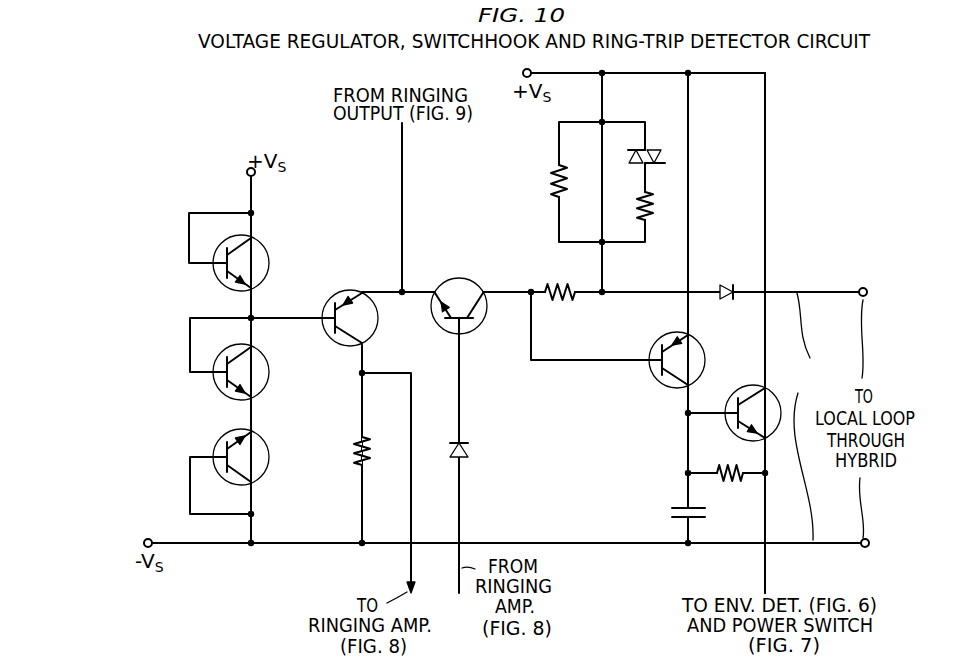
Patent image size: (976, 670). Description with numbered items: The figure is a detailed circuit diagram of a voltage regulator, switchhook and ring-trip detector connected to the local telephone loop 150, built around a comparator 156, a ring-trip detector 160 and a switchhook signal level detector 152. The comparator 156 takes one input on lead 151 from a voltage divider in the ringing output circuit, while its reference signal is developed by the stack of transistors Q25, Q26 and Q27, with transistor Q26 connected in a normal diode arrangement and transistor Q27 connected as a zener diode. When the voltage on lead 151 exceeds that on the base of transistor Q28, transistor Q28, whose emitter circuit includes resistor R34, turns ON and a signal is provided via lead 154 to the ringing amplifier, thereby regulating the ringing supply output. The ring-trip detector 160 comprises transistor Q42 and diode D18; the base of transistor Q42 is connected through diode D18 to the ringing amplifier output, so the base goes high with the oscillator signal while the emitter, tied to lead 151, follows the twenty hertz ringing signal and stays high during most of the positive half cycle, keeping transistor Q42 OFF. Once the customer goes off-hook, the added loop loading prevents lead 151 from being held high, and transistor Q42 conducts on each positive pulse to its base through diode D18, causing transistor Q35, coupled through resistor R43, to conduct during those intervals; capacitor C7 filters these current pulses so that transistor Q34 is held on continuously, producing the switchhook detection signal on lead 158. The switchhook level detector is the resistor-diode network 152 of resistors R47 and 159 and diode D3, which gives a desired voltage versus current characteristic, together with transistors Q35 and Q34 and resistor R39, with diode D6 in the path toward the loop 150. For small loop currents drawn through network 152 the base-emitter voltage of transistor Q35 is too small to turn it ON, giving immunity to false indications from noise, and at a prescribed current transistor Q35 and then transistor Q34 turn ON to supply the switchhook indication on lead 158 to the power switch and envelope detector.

The transistor Q25 is at (221, 283).
The transistor Q26 is at (221, 392).
The transistor Q27 is at (221, 437).
The transistor Q28 is at (330, 338).
The transistor Q42 is at (479, 327).
The transistor Q35 is at (658, 380).
The transistor Q34 is at (744, 389).
The resistor R34 is at (354, 445).
The resistor R43 is at (550, 285).
The resistor R47 is at (549, 177).
The resistor R39 is at (728, 483).
The diode D3 is at (665, 157).
The diode D6 is at (723, 278).
The diode D18 is at (470, 452).
The capacitor C7 is at (675, 507).
The local telephone loop 150 is at (826, 416).
The lead 151 is at (402, 158).
The switchhook signal level detector 152 is at (660, 280).
The lead 154 is at (411, 573).
The comparator 156 is at (348, 243).
The lead 158 is at (767, 568).
The resistor 159 is at (655, 205).
The ring-trip detector 160 is at (468, 264).